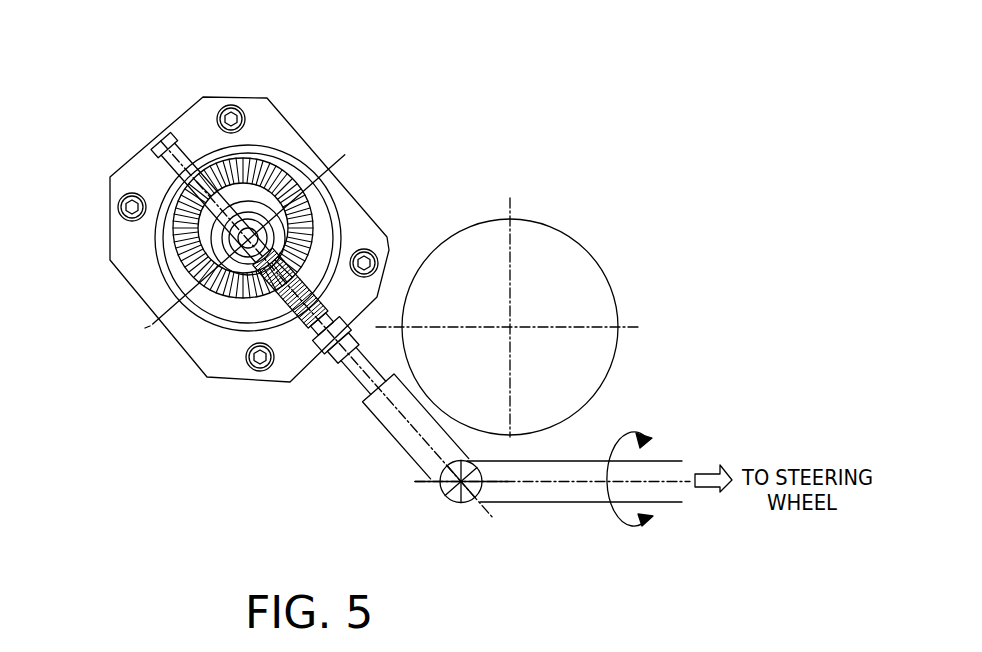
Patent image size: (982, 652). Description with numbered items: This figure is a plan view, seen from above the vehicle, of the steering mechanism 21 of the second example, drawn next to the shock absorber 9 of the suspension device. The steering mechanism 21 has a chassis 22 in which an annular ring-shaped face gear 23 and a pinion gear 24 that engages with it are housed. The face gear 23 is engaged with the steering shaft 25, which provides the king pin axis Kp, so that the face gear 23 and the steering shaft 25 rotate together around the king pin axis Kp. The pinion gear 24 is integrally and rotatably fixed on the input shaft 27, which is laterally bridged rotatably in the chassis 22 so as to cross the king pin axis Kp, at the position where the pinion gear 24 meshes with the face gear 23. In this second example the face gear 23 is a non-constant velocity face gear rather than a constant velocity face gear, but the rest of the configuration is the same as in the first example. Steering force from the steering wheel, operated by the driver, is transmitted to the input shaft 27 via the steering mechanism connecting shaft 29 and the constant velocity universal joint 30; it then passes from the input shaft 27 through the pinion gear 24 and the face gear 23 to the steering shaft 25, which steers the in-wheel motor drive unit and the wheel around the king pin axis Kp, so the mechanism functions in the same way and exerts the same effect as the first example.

The shock absorber 9 is at (607, 263).
The steering mechanism 21 is at (101, 222).
The chassis 22 is at (157, 256).
The face gear 23 is at (275, 164).
The pinion gear 24 is at (300, 247).
The steering shaft 25 is at (253, 214).
The input shaft 27 is at (336, 364).
The steering mechanism connecting shaft 29 is at (533, 503).
The constant velocity universal joint 30 is at (480, 472).
The king pin axis Kp is at (218, 295).